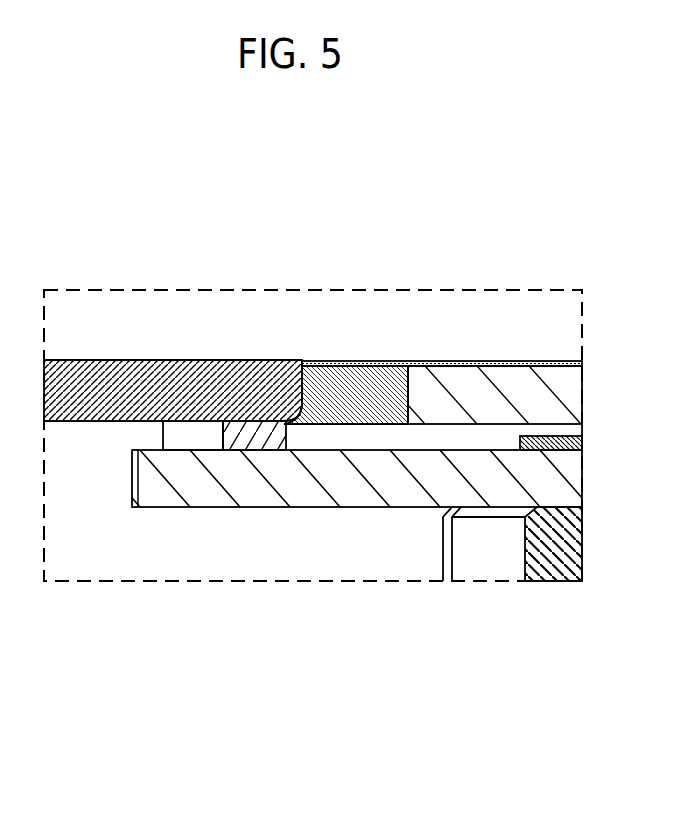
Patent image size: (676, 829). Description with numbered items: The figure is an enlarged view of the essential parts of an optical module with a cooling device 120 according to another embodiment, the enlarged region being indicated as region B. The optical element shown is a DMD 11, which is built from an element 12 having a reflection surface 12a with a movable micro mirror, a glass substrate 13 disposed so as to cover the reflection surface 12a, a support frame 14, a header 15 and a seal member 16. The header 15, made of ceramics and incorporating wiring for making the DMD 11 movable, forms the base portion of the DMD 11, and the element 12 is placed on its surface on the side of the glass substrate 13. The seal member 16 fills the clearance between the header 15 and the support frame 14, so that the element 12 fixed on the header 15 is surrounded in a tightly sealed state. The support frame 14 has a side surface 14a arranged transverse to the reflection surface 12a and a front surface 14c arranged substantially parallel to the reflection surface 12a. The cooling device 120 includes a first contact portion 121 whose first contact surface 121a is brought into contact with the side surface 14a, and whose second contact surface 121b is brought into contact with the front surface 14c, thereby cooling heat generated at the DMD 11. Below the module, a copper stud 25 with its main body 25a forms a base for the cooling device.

The enlarged region B is at (78, 289).
The first contact portion 121 is at (157, 358).
The first contact surface 121a is at (328, 366).
The second contact surface 121b is at (180, 423).
The support frame 14 is at (373, 383).
The side surface 14a is at (298, 380).
The front surface 14c is at (237, 420).
The DMD 11 is at (446, 358).
The glass substrate 13 is at (511, 397).
The element 12 is at (583, 443).
The reflection surface 12a is at (563, 435).
The header 15 is at (370, 490).
The seal member 16 is at (263, 440).
The cooling device 120 is at (417, 590).
The stud 25 is at (570, 595).
The main body 25a is at (576, 548).